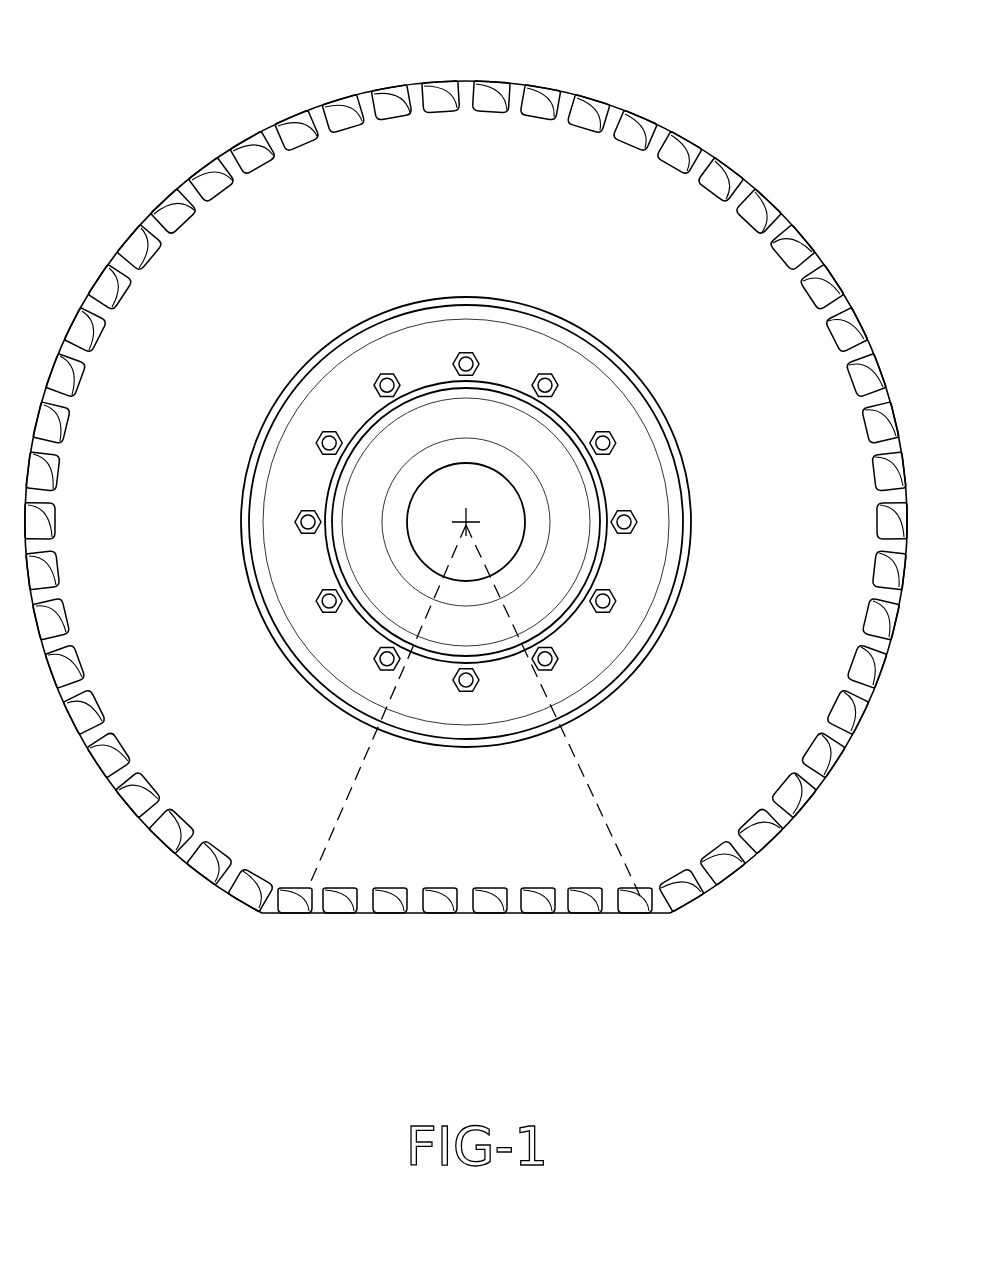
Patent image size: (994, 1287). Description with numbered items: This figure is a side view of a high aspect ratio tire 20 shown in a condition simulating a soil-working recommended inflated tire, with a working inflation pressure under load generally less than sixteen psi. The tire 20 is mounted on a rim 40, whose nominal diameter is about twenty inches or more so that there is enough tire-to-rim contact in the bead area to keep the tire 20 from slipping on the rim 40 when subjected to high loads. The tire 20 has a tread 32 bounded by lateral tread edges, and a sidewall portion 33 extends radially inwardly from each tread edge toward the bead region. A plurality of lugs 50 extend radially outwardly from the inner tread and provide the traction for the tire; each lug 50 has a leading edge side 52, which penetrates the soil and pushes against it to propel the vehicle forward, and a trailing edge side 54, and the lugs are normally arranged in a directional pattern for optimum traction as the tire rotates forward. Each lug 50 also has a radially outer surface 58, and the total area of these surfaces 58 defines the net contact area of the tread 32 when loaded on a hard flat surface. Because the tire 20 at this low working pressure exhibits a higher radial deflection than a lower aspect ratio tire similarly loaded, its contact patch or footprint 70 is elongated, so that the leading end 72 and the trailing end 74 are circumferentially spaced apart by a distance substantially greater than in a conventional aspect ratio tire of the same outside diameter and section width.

The tire 20 is at (663, 253).
The tread 32 is at (503, 80).
The sidewall portion 33 is at (540, 170).
The rim 40 is at (582, 402).
The lug 50 is at (410, 82).
The leading edge side 52 is at (120, 247).
The trailing edge side 54 is at (192, 177).
The radially outer surface 58 is at (383, 88).
The footprint 70 is at (385, 933).
The leading end 72 is at (565, 740).
The trailing end 74 is at (373, 741).